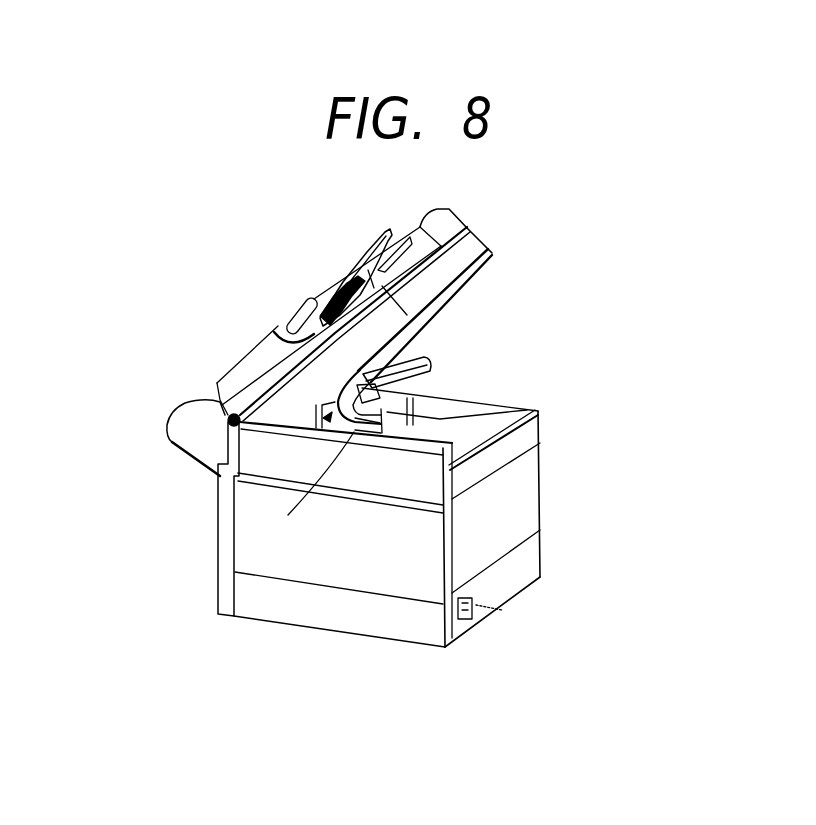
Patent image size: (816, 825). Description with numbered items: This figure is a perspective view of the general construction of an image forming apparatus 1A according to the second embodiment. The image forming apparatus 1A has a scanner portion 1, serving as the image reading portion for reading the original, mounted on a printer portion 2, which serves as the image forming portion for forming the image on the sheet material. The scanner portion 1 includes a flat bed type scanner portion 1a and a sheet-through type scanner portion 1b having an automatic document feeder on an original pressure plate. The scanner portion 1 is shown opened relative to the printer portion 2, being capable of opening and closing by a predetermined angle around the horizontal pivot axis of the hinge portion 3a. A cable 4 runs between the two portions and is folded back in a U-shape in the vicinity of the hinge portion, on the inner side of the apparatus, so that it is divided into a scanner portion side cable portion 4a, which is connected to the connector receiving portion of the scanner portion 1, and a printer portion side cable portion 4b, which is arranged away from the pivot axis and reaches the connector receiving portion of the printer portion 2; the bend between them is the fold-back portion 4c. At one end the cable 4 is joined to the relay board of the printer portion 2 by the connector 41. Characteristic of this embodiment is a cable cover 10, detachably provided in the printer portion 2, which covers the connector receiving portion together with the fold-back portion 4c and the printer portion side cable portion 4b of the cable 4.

The scanner portion 1 is at (281, 314).
The flat bed type scanner portion 1a is at (446, 284).
The sheet-through type scanner portion 1b is at (452, 224).
The image forming apparatus 1A is at (605, 321).
The printer portion 2 is at (494, 538).
The hinge portion 3a is at (222, 424).
The cable 4 is at (236, 485).
The scanner portion side cable portion 4a is at (366, 370).
The printer portion side cable portion 4b is at (352, 443).
The fold-back portion 4c is at (318, 407).
The cable cover 10 is at (429, 365).
The connector 41 is at (474, 404).